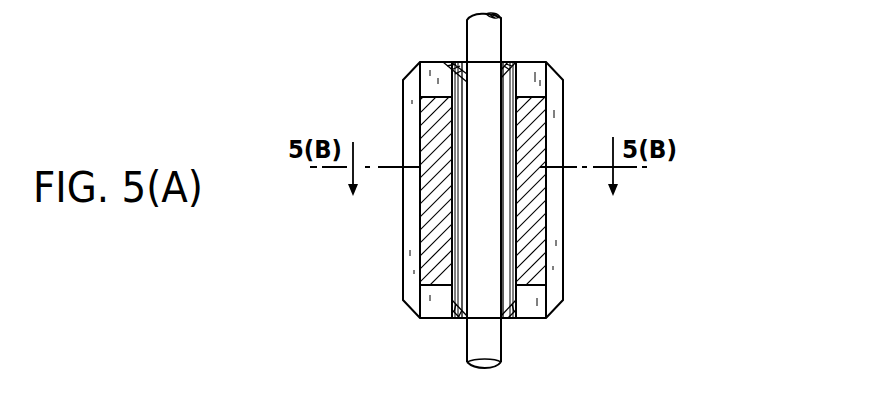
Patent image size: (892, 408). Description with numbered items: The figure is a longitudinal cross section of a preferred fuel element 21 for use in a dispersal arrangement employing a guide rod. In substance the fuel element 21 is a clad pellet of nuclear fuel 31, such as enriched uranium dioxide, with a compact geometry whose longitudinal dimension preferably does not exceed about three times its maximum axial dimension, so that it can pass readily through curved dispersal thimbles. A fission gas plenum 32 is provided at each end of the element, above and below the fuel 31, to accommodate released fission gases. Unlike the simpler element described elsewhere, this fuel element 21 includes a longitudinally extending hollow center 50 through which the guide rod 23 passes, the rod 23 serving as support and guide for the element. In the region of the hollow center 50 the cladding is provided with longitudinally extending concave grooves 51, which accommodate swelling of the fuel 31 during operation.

The fuel element 21 is at (580, 238).
The guide rod 23 is at (470, 43).
The concave grooves 51 is at (403, 118).
The nuclear fuel 31 is at (450, 245).
The fission gas plenum 32 is at (430, 303).
The hollow center 50 is at (505, 227).